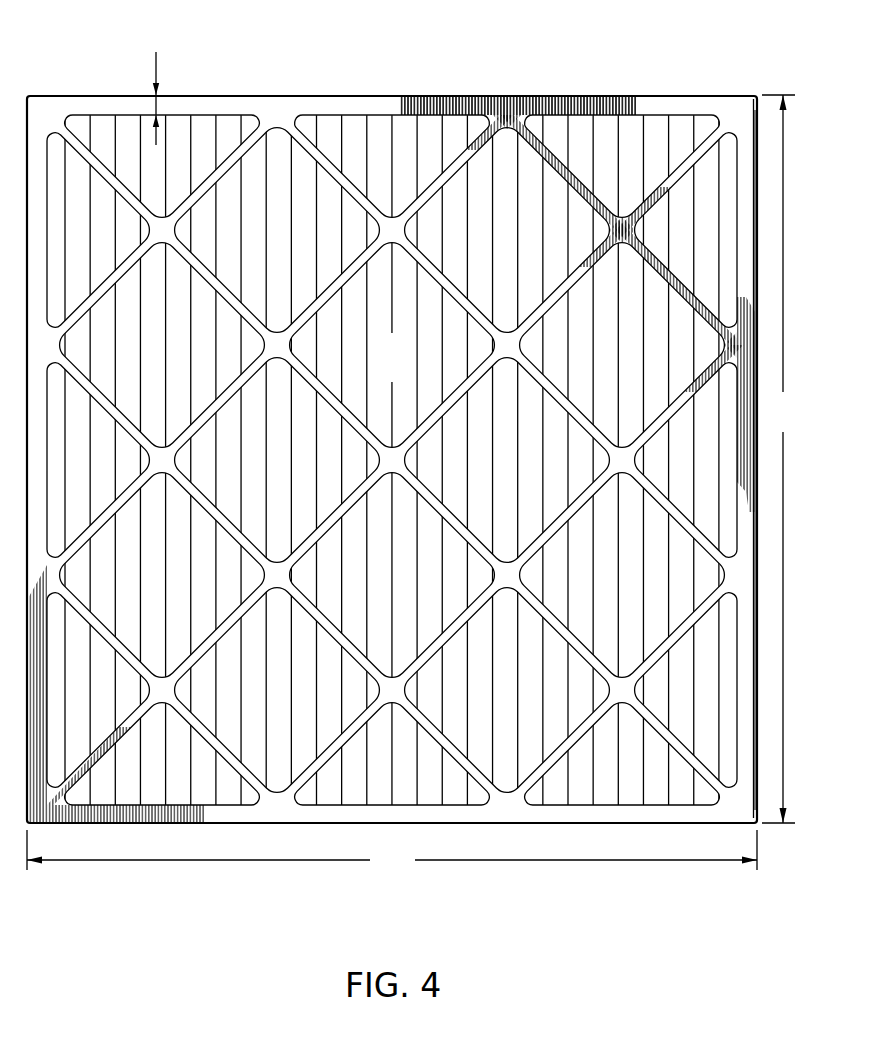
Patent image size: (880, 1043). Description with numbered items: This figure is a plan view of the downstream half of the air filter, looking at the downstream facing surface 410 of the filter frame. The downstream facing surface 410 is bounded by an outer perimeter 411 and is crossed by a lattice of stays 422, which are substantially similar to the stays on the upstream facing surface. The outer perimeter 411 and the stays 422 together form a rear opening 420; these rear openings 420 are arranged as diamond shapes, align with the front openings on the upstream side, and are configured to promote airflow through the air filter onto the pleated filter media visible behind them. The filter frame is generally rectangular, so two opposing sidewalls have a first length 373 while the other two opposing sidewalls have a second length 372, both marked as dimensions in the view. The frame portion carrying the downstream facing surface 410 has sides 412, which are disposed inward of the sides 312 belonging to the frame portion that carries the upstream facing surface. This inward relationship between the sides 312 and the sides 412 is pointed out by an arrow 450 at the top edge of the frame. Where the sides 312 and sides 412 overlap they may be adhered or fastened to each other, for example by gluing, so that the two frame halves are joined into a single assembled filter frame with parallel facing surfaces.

The downstream facing surface 410 is at (48, 115).
The arrow 450 is at (160, 97).
The rear opening 420 is at (333, 135).
The sides 412 is at (370, 95).
The sides 312 is at (497, 97).
The stays 422 is at (565, 172).
The outer perimeter 411 is at (672, 103).
The first length 373 is at (782, 459).
The second length 372 is at (392, 850).